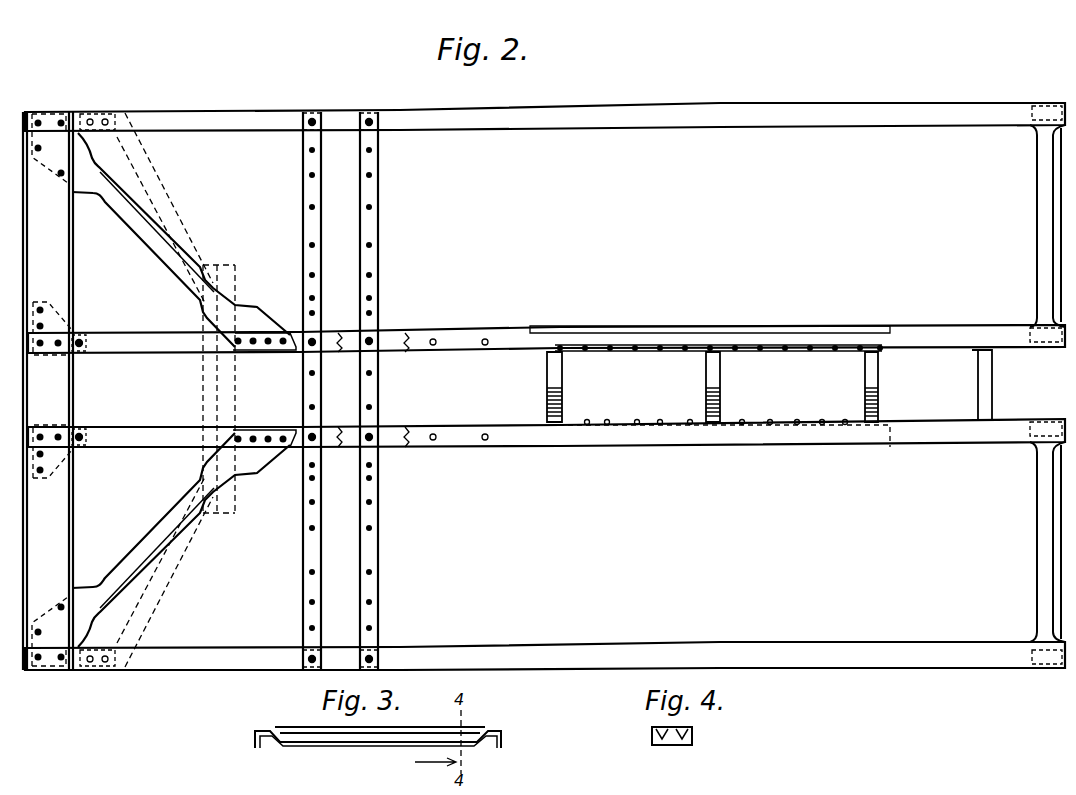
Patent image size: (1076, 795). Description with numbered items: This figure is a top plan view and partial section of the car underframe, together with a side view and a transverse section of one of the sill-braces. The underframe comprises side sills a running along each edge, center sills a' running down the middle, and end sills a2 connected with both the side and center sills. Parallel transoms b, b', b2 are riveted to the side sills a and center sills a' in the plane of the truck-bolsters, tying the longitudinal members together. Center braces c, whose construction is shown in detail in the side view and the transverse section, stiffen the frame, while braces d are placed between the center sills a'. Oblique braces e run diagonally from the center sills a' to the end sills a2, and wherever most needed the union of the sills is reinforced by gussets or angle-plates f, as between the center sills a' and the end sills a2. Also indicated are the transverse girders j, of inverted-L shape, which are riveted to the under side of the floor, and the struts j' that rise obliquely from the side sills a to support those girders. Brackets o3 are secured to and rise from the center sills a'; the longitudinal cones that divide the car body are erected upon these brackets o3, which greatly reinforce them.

In FIG. 2, the side sill a is at (545, 373).
In FIG. 2, the center sill a' is at (546, 373).
In FIG. 2, the end sill a2 is at (60, 506).
In FIG. 2, the transom b is at (355, 391).
In FIG. 2, the transom b' is at (387, 269).
In FIG. 2, the transom b2 is at (380, 540).
In FIG. 2, the center brace c is at (1036, 262).
In FIG. 3, the center brace c is at (355, 740).
In FIG. 4, the center brace c is at (672, 752).
In FIG. 2, the brace d is at (977, 385).
In FIG. 2, the oblique brace e is at (158, 247).
In FIG. 2, the gusset or angle-plate f is at (74, 333).
In FIG. 2, the transverse girder j is at (198, 389).
In FIG. 2, the strut j' is at (165, 390).
In FIG. 2, the bracket o3 is at (565, 378).